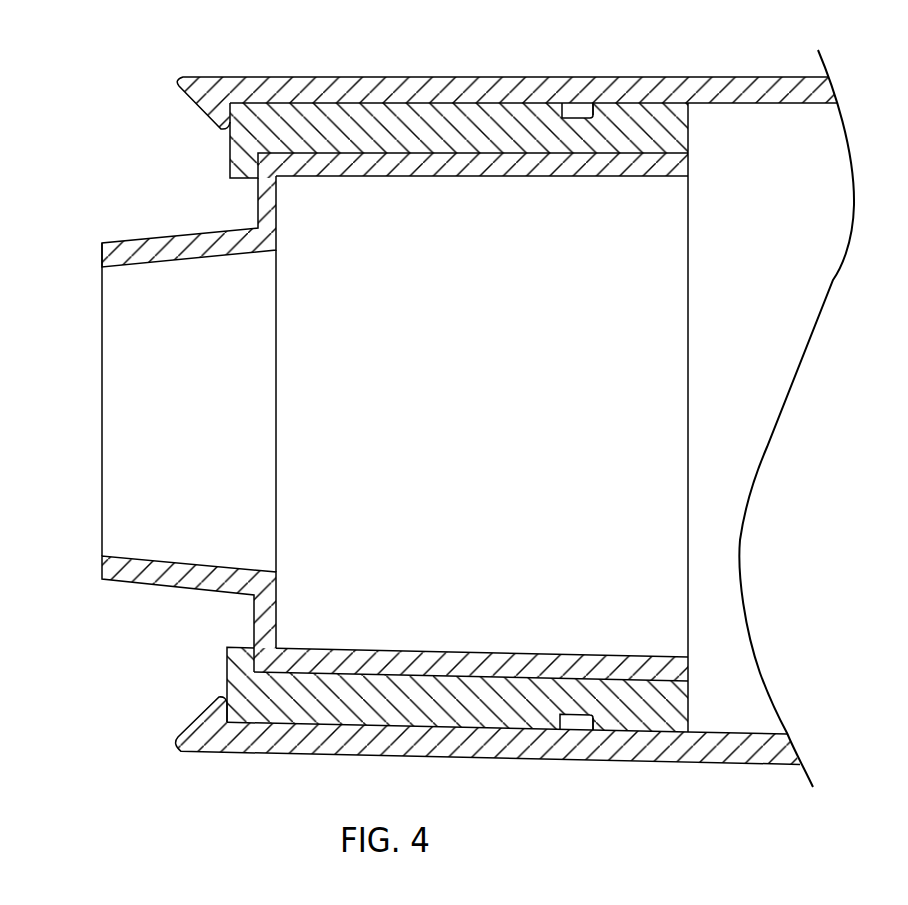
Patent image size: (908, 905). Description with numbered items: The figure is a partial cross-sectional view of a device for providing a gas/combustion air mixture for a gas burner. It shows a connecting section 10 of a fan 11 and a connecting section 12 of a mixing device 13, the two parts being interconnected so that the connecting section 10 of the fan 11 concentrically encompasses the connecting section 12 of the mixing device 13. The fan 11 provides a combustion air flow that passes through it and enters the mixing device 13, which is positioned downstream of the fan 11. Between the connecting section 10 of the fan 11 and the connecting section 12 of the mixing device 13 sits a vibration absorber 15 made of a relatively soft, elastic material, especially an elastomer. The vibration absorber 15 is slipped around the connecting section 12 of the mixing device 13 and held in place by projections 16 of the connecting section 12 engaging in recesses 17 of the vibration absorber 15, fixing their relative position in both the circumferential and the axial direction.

The connecting section of the fan 10 is at (482, 168).
The fan 11 is at (177, 242).
The connecting section of the mixing device 12 is at (385, 92).
The mixing device 13 is at (718, 83).
The vibration absorber 15 is at (358, 133).
The projections 16 is at (585, 113).
The recesses 17 is at (574, 115).